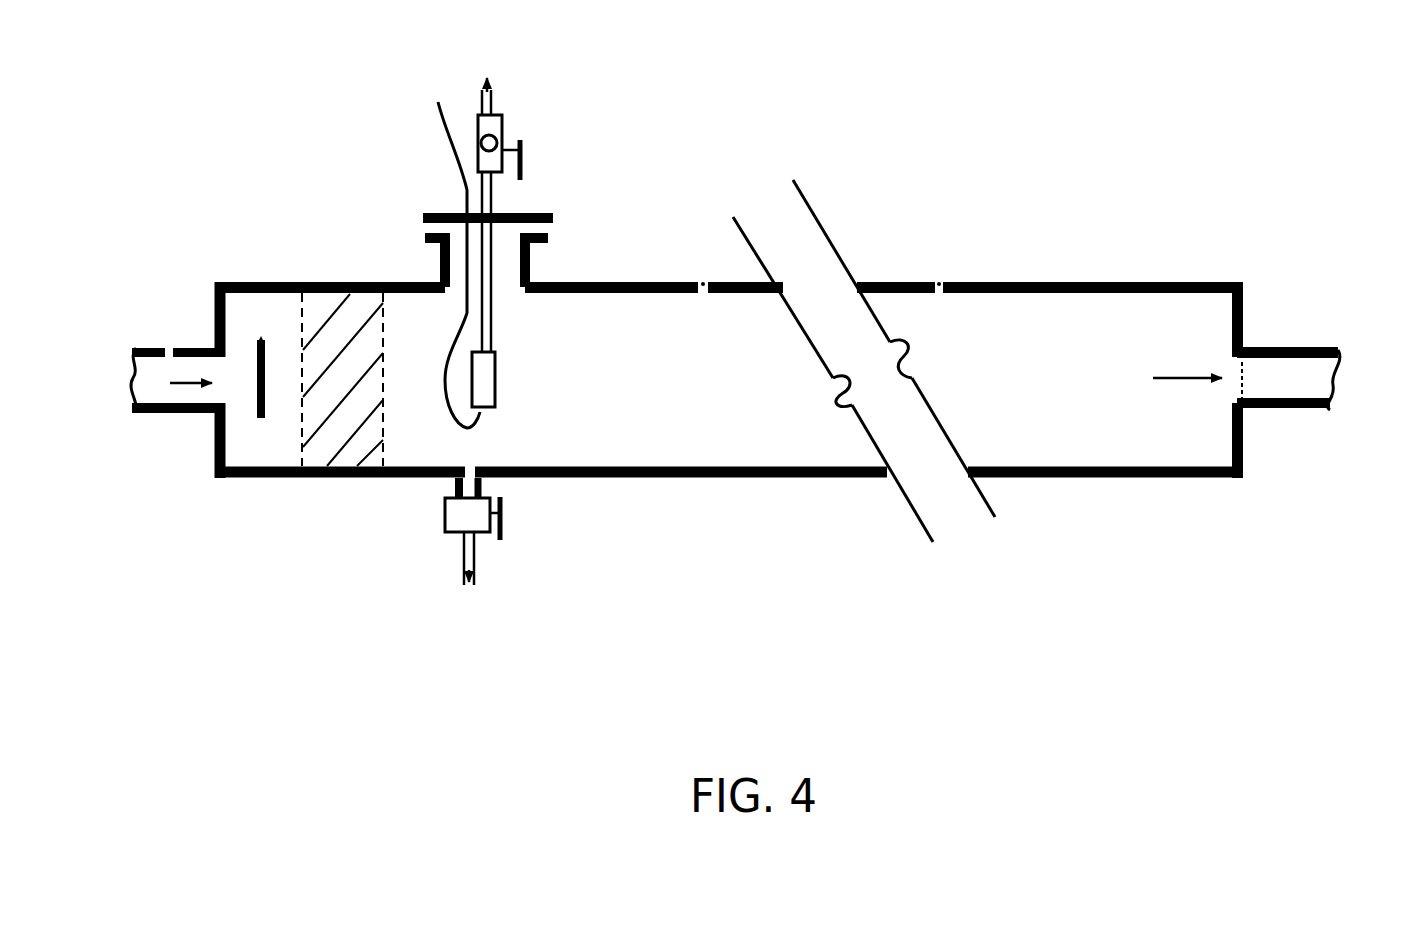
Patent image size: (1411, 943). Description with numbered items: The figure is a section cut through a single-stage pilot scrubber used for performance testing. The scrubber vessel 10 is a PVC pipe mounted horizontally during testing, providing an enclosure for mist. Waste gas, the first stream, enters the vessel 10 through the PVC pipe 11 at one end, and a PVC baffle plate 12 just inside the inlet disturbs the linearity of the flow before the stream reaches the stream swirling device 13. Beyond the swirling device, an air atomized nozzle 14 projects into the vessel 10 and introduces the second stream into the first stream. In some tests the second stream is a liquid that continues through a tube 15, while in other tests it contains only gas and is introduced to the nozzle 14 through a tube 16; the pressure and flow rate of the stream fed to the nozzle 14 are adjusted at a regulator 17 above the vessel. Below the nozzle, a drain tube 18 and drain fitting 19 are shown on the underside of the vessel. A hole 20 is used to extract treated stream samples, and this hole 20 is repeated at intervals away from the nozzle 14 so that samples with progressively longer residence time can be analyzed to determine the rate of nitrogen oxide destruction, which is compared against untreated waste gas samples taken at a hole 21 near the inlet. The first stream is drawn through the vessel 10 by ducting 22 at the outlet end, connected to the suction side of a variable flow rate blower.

The scrubber vessel 10 is at (245, 277).
The PVC pipe 11 is at (124, 387).
The PVC baffle plate 12 is at (250, 390).
The stream swirling device 13 is at (350, 398).
The air atomized nozzle 14 is at (500, 377).
The tube 15 is at (430, 132).
The tube 16 is at (488, 191).
The regulator 17 is at (510, 124).
The drain tube 18 is at (468, 589).
The drain fitting 19 is at (508, 523).
The hole 20 is at (701, 275).
The hole 21 is at (169, 332).
The ducting 22 is at (1343, 382).